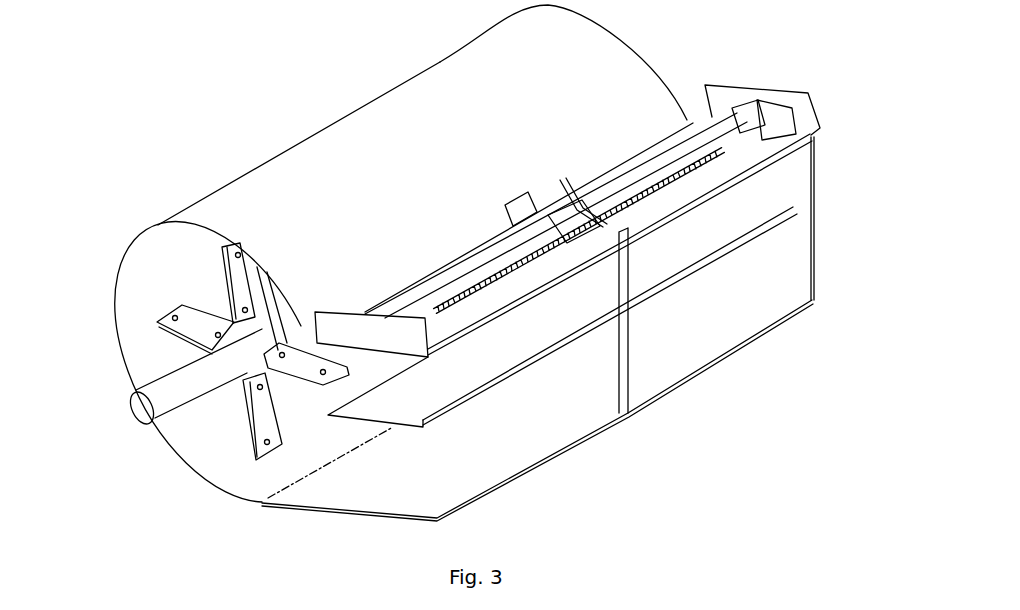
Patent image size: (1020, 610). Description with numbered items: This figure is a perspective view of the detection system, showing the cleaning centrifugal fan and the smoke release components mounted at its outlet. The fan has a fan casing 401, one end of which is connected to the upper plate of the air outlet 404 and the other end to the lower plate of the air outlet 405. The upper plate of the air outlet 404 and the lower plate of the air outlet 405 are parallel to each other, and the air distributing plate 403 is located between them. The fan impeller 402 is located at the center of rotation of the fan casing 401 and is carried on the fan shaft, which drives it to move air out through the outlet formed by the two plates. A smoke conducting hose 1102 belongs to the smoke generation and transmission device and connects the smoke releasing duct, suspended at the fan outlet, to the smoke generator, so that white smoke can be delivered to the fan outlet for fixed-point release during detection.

The fan casing 401 is at (322, 185).
The fan impeller 402 is at (203, 307).
The air distributing plate 403 is at (688, 275).
The upper plate of the air outlet 404 is at (790, 170).
The lower plate of the air outlet 405 is at (667, 376).
The smoke conducting hose 1102 is at (770, 122).